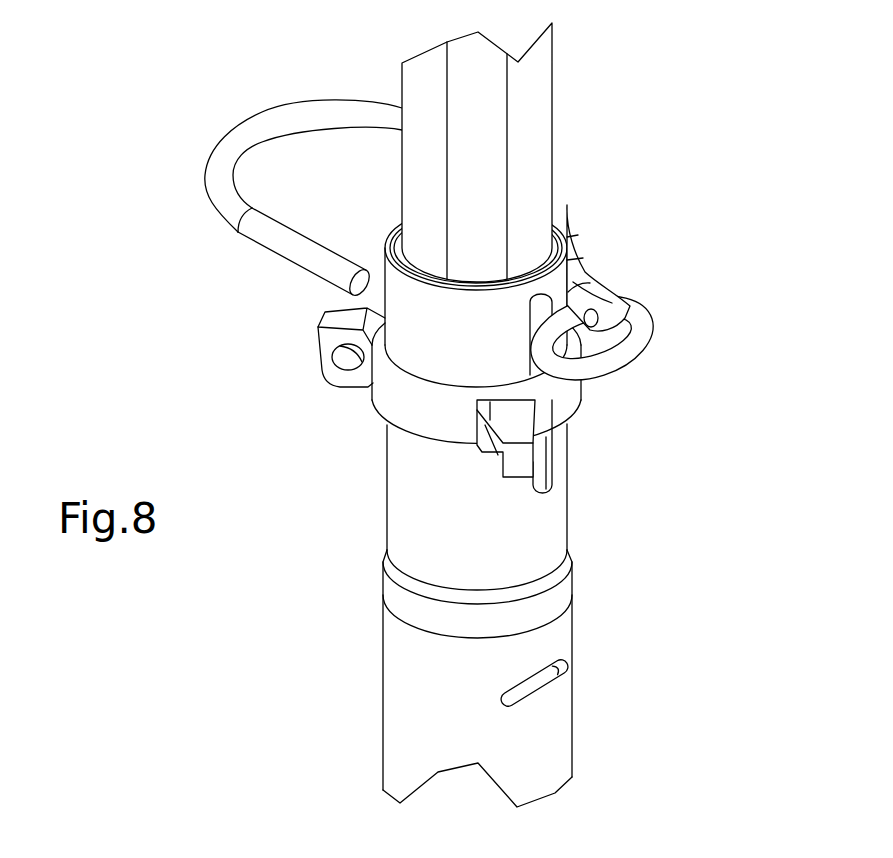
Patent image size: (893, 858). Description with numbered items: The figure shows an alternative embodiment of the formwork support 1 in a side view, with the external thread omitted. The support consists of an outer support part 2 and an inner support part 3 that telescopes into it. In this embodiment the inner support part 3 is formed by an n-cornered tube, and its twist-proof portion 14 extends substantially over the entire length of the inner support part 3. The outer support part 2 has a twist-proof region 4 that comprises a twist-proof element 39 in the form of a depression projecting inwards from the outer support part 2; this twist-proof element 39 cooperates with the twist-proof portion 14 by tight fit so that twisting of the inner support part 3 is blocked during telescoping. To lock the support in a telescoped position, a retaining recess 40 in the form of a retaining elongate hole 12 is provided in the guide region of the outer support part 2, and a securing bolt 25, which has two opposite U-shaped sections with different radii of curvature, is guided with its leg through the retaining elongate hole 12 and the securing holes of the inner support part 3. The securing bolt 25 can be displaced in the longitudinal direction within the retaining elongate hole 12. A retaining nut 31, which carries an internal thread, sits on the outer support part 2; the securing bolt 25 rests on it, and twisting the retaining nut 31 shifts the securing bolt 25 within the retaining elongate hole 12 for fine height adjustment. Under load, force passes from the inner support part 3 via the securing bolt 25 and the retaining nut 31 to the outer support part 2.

The formwork support 1 is at (547, 515).
The outer support part 2 is at (403, 680).
The inner support part 3 is at (303, 199).
The twist-proof region 4 is at (538, 723).
The retaining elongate hole 12 is at (538, 463).
The twist-proof portion 14 is at (528, 90).
The securing bolt 25 is at (633, 345).
The retaining nut 31 is at (560, 402).
The twist-proof element 39 is at (540, 687).
The retaining recess 40 is at (528, 480).